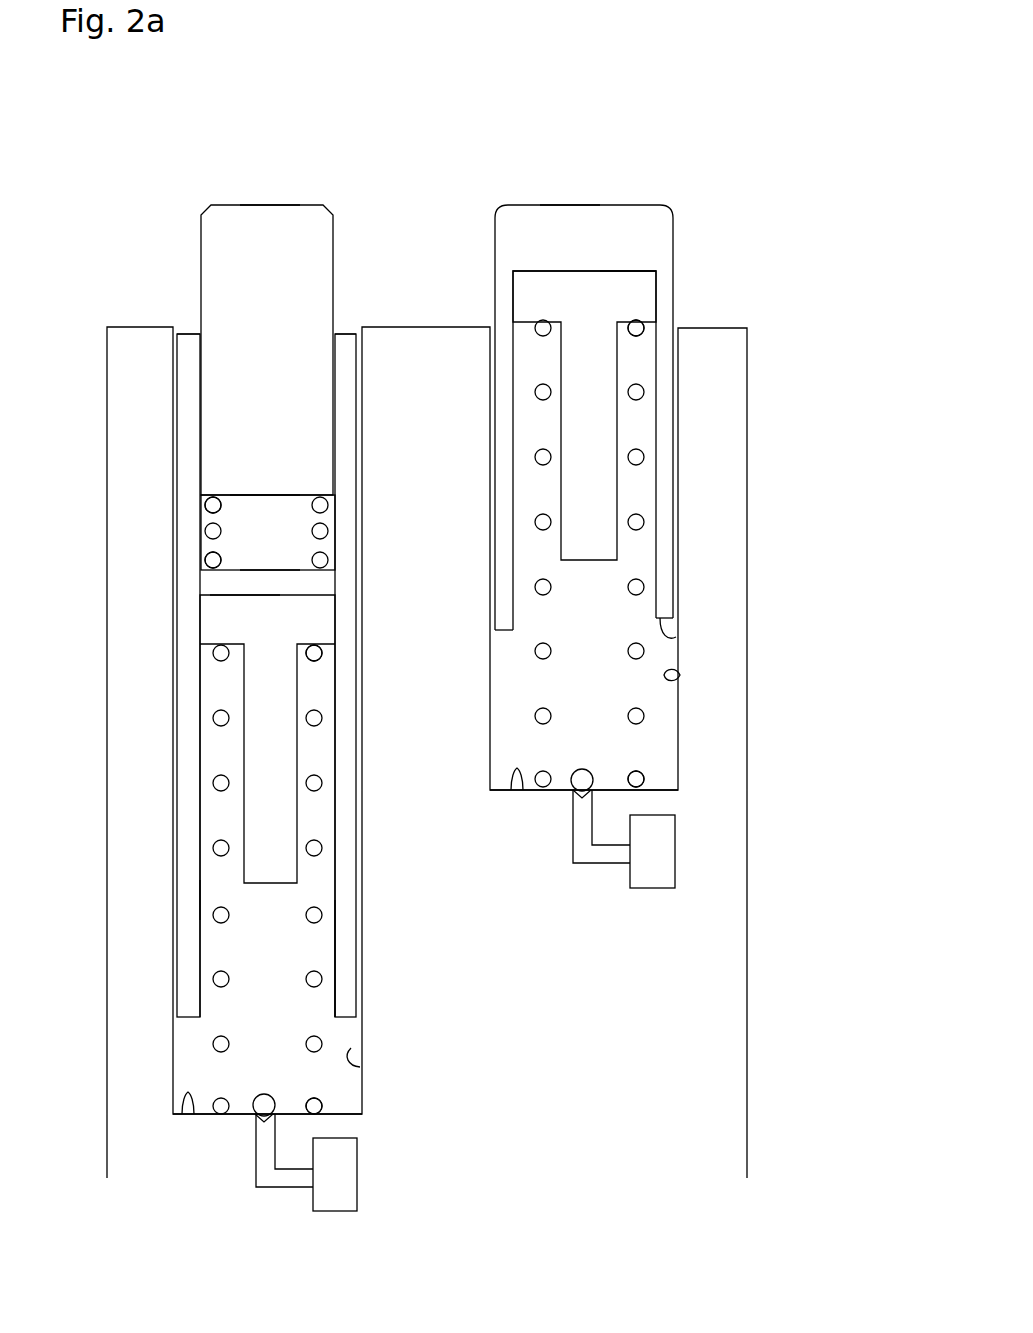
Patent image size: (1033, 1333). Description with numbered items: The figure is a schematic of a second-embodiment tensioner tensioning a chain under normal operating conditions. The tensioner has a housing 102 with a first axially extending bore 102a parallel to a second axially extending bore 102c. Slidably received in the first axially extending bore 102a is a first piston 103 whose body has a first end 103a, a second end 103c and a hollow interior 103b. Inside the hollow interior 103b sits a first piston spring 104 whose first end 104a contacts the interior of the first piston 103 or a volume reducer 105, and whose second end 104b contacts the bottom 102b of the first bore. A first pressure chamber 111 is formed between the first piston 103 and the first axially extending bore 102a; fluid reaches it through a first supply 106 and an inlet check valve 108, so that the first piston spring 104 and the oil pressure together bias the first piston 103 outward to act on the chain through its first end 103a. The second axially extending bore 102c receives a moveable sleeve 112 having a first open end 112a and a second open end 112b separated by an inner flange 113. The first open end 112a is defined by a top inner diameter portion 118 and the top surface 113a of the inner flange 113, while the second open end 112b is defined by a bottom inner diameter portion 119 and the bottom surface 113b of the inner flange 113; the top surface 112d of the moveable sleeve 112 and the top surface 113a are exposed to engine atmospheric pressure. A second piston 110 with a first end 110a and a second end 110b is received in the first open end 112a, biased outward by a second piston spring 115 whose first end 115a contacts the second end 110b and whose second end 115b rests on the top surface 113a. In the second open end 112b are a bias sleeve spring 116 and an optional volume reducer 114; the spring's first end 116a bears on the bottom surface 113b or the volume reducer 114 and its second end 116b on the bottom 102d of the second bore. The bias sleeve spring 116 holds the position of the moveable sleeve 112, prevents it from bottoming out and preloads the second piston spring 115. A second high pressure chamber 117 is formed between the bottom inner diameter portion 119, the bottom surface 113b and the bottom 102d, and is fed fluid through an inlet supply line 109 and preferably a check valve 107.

The housing 102 is at (749, 975).
The first axially extending bore 102a is at (680, 681).
The bottom of the first axially extending bore 102b is at (511, 790).
The second axially extending bore 102c is at (360, 1067).
The bottom of the second axially extending bore 102d is at (186, 1112).
The first piston 103 is at (584, 417).
The first end of the first piston 103a is at (572, 205).
The hollow interior of the first piston 103b is at (614, 273).
The second end of the first piston 103c is at (676, 637).
The first piston spring 104 is at (642, 459).
The first end of the first piston spring 104a is at (642, 331).
The second end of the first piston spring 104b is at (645, 780).
The volume reducer 105 is at (584, 415).
The first supply 106 is at (602, 866).
The check valve 107 is at (257, 1115).
The inlet check valve 108 is at (590, 785).
The inlet supply line 109 is at (285, 1188).
The second piston 110 is at (267, 350).
The first end of the second piston 110a is at (253, 205).
The second end of the second piston 110b is at (258, 496).
The first pressure chamber 111 is at (584, 701).
The moveable sleeve 112 is at (345, 465).
The first open end of the moveable sleeve 112a is at (337, 368).
The second open end of the moveable sleeve 112b is at (312, 940).
The top surface of the moveable sleeve 112d is at (190, 337).
The inner flange 113 is at (297, 579).
The top surface of the inner flange 113a is at (274, 570).
The bottom surface of the inner flange 113b is at (243, 595).
The volume reducer 114 is at (267, 806).
The second piston spring 115 is at (200, 532).
The first end of the second piston spring 115a is at (200, 506).
The second end of the second piston spring 115b is at (200, 569).
The bias sleeve spring 116 is at (320, 787).
The first end of the bias sleeve spring 116a is at (322, 657).
The second end of the bias sleeve spring 116b is at (323, 1106).
The second high pressure chamber 117 is at (267, 1028).
The top inner diameter portion 118 is at (322, 515).
The bottom inner diameter portion 119 is at (200, 902).